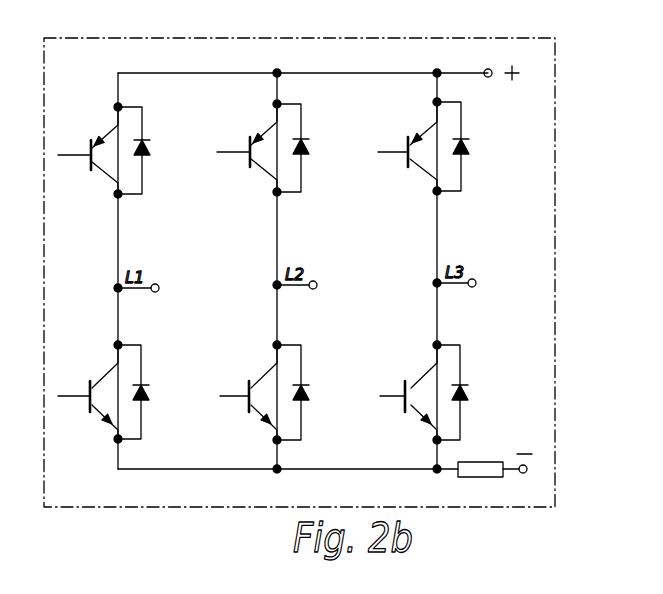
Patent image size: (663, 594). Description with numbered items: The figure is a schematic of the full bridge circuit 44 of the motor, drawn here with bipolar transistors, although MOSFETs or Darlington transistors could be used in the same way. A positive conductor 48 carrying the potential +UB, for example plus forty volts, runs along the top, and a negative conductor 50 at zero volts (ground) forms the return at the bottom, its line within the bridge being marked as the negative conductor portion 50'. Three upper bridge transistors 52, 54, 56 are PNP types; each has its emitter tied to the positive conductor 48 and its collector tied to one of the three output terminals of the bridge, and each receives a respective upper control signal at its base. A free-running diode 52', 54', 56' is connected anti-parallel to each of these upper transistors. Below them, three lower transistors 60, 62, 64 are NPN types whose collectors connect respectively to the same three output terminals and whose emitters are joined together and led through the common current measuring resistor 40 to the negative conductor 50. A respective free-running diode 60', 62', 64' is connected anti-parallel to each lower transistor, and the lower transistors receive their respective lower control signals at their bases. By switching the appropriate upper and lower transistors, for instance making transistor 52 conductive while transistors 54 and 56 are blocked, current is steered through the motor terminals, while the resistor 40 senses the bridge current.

The bridge circuit 44 is at (217, 34).
The positive conductor 48 is at (349, 70).
The negative conductor portion 50' is at (288, 459).
The negative conductor 50 is at (512, 480).
The current measuring resistor 40 is at (472, 478).
The upper bridge transistor 52 is at (88, 142).
The upper bridge transistor 54 is at (249, 144).
The upper bridge transistor 56 is at (407, 140).
The free-running diode 52' is at (154, 150).
The free-running diode 54' is at (319, 149).
The free-running diode 56' is at (476, 146).
The lower transistor 60 is at (87, 385).
The lower transistor 62 is at (249, 388).
The lower transistor 64 is at (409, 387).
The free-running diode 60' is at (155, 392).
The free-running diode 62' is at (312, 392).
The free-running diode 64' is at (476, 392).